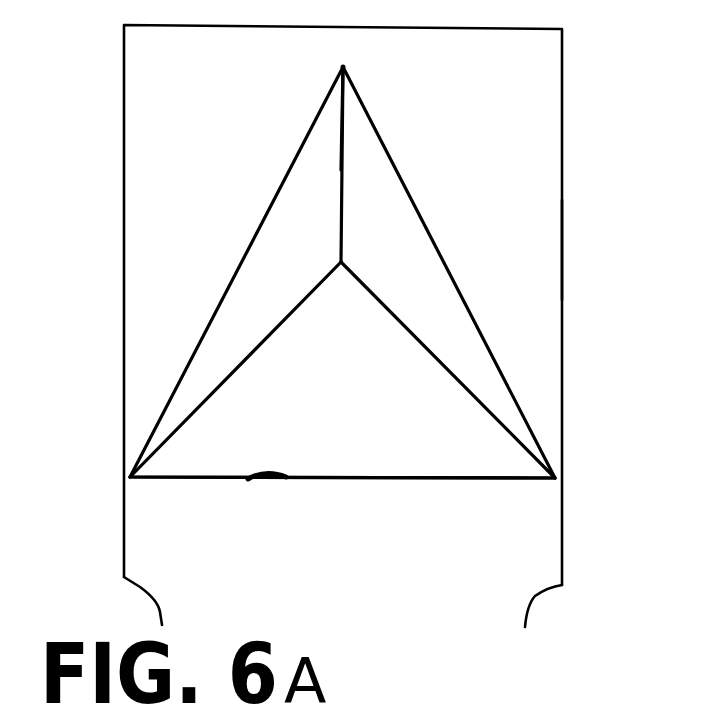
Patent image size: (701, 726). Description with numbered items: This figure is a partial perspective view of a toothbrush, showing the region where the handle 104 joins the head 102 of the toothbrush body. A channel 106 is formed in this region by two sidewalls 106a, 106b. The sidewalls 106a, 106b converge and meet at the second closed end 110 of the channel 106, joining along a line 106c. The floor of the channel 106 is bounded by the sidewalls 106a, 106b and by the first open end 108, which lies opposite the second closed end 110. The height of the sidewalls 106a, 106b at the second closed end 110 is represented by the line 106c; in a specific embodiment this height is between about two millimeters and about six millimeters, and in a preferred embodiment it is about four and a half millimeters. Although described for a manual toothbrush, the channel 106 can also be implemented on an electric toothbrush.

The head 102 is at (525, 627).
The handle 104 is at (503, 311).
The channel 106 is at (310, 415).
The sidewall 106a is at (405, 282).
The sidewall 106b is at (297, 240).
The line 106c is at (340, 167).
The first open end 108 is at (247, 480).
The second closed end 110 is at (345, 68).